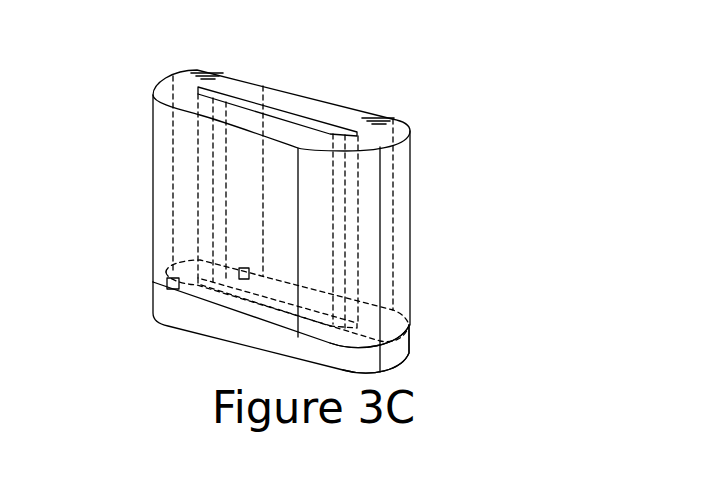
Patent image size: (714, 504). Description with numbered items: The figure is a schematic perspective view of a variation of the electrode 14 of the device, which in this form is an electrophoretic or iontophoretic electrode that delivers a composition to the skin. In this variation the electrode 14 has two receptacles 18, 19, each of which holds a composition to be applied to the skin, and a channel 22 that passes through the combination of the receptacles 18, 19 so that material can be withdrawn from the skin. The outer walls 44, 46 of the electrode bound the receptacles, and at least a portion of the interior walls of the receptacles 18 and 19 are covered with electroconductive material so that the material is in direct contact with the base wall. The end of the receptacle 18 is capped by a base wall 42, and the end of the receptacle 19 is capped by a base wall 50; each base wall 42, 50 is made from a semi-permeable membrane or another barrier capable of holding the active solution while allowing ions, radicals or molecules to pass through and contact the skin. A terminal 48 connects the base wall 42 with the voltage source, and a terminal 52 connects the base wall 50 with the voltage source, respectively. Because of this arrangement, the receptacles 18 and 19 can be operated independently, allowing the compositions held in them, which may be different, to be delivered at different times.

The electrode 14 is at (280, 195).
The receptacle 18 is at (168, 227).
The receptacle 19 is at (398, 163).
The channel 22 is at (334, 122).
The base wall 42 is at (172, 297).
The wall 44 is at (153, 162).
The wall 46 is at (282, 90).
The terminal 48 is at (167, 282).
The base wall 50 is at (407, 327).
The terminal 52 is at (243, 268).